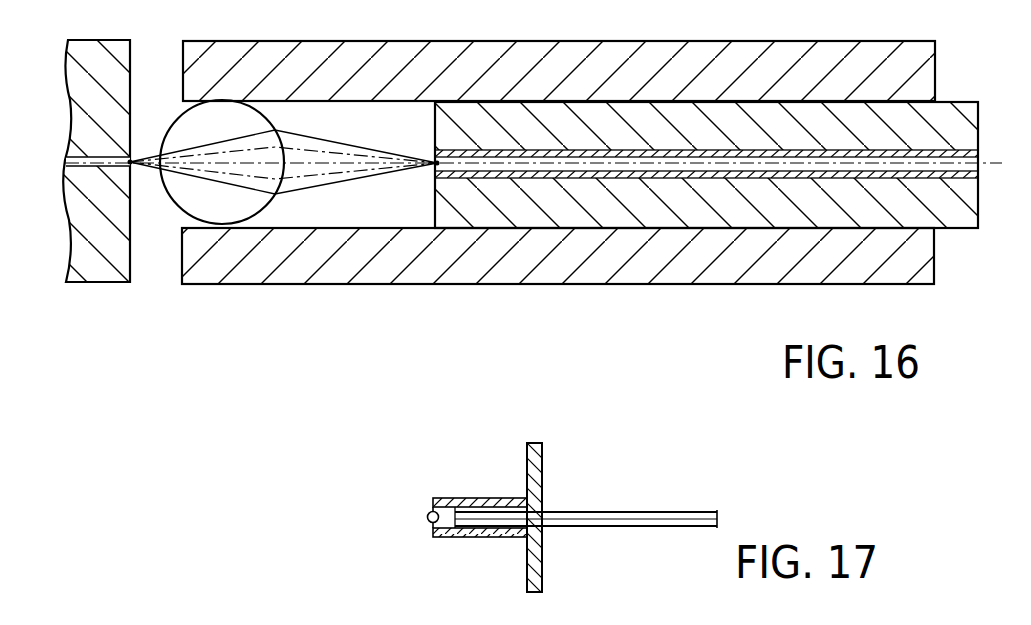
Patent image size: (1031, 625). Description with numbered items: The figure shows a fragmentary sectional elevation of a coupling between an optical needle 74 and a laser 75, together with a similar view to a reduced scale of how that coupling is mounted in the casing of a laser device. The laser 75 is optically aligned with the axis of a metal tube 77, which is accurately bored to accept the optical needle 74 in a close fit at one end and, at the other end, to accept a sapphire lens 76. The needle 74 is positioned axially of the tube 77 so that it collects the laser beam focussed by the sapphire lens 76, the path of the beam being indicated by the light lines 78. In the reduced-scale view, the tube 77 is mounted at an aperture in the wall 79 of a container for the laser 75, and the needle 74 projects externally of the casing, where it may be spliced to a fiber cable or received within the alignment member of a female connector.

In FIG. 16, the optical needle 74 is at (690, 212).
In FIG. 17, the optical needle 74 is at (485, 513).
In FIG. 16, the laser 75 is at (100, 275).
In FIG. 16, the sapphire lens 76 is at (190, 210).
In FIG. 17, the sapphire lens 76 is at (427, 517).
In FIG. 16, the metal tube 77 is at (465, 267).
In FIG. 17, the metal tube 77 is at (457, 530).
In FIG. 16, the light lines 78 is at (328, 190).
In FIG. 17, the wall 79 is at (538, 552).